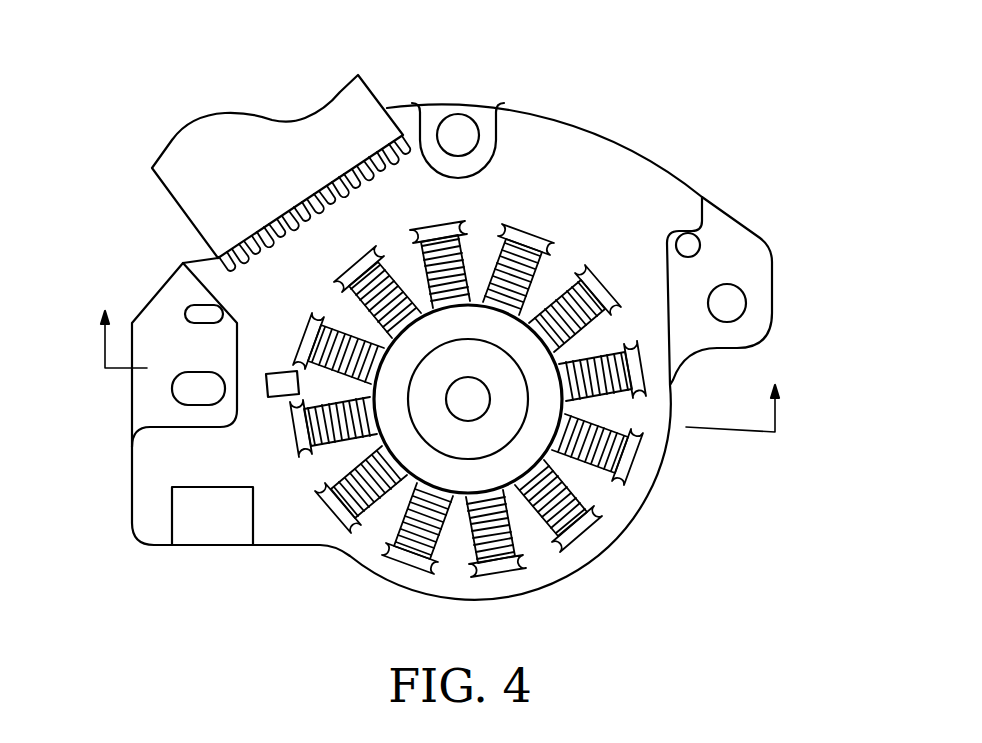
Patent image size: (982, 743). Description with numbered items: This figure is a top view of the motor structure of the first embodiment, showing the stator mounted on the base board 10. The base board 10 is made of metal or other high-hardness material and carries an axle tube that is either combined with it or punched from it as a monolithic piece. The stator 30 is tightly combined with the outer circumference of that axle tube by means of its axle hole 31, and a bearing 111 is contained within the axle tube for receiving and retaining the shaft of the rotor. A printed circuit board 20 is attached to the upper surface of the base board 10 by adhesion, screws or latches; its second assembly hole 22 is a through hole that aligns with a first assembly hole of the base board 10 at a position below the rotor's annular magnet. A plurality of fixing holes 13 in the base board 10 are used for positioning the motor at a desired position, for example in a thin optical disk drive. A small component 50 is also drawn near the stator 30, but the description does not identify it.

The base board 10 is at (735, 245).
The fixing holes 13 is at (727, 303).
The printed circuit board 20 is at (607, 167).
The second assembly hole 22 is at (267, 383).
The stator 30 is at (520, 257).
The axle hole 31 is at (468, 339).
The sensor / circuit element 50 is at (287, 388).
The bearing 111 is at (500, 423).